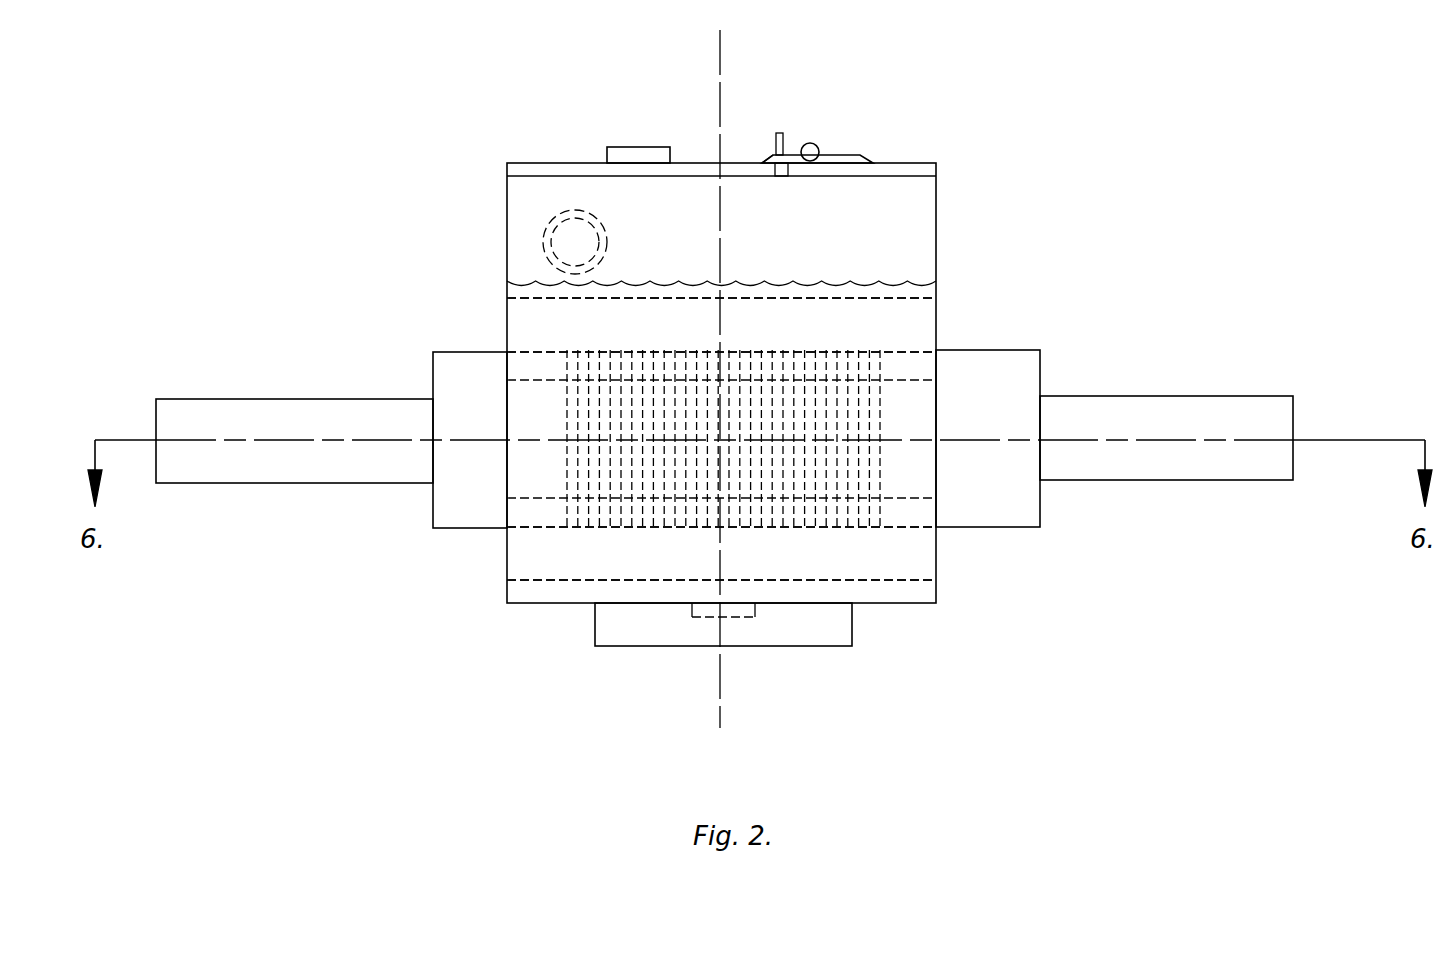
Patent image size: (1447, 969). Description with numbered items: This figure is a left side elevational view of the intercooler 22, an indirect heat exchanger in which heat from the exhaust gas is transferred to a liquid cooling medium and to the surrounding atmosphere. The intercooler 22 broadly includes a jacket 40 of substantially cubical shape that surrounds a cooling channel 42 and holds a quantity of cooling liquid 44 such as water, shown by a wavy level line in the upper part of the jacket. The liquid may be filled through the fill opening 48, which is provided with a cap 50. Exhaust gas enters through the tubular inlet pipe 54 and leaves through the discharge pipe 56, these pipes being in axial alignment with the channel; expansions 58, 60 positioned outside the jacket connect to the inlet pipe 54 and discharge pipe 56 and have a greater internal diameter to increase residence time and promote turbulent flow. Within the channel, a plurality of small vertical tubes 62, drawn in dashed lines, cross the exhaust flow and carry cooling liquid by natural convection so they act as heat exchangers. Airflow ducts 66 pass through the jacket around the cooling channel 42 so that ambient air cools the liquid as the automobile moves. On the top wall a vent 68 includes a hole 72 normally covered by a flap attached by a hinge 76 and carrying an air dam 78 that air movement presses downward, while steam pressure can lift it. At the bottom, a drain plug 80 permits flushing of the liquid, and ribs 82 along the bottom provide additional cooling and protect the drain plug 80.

The intercooler 22 is at (543, 686).
The jacket 40 is at (922, 249).
The cooling channel 42 is at (525, 484).
The cooling liquid 44 is at (928, 290).
The fill opening 48 is at (577, 240).
The cap 50 is at (635, 152).
The inlet pipe 54 is at (1216, 396).
The discharge pipe 56 is at (224, 398).
The expansion 58 is at (1035, 358).
The expansion 60 is at (455, 357).
The vertical tubes 62 is at (566, 503).
The airflow ducts 66 is at (534, 299).
The vent 68 is at (766, 159).
The hole 72 is at (782, 173).
The hinge 76 is at (822, 149).
The air dam 78 is at (782, 131).
The drain plug 80 is at (732, 617).
The ribs 82 is at (660, 637).